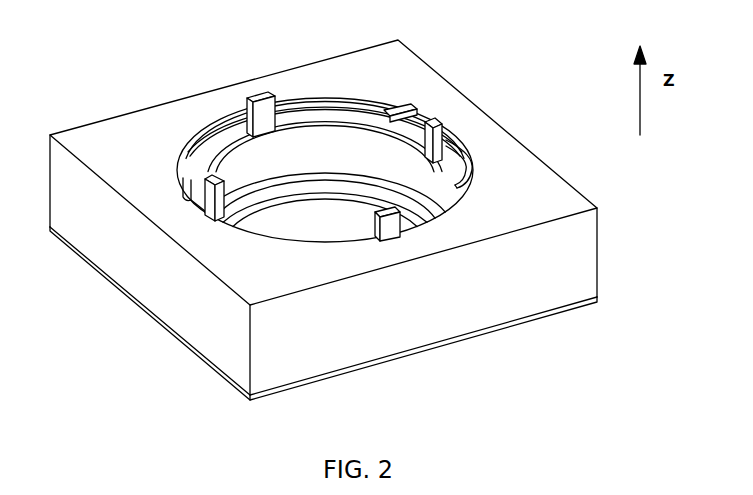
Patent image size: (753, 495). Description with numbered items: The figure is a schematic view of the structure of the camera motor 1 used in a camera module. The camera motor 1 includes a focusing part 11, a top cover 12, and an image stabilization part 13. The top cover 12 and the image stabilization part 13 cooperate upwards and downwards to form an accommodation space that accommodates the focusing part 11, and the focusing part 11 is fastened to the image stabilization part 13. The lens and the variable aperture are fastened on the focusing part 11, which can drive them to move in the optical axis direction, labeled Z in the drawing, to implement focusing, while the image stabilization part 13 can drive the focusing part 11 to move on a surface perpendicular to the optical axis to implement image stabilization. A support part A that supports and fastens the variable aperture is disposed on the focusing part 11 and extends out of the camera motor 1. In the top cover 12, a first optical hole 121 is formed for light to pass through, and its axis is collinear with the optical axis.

The camera motor 1 is at (50, 38).
The focusing part 11 is at (353, 110).
The top cover 12 is at (487, 178).
The first optical hole 121 is at (460, 197).
The image stabilization part 13 is at (497, 331).
The support part A is at (440, 118).